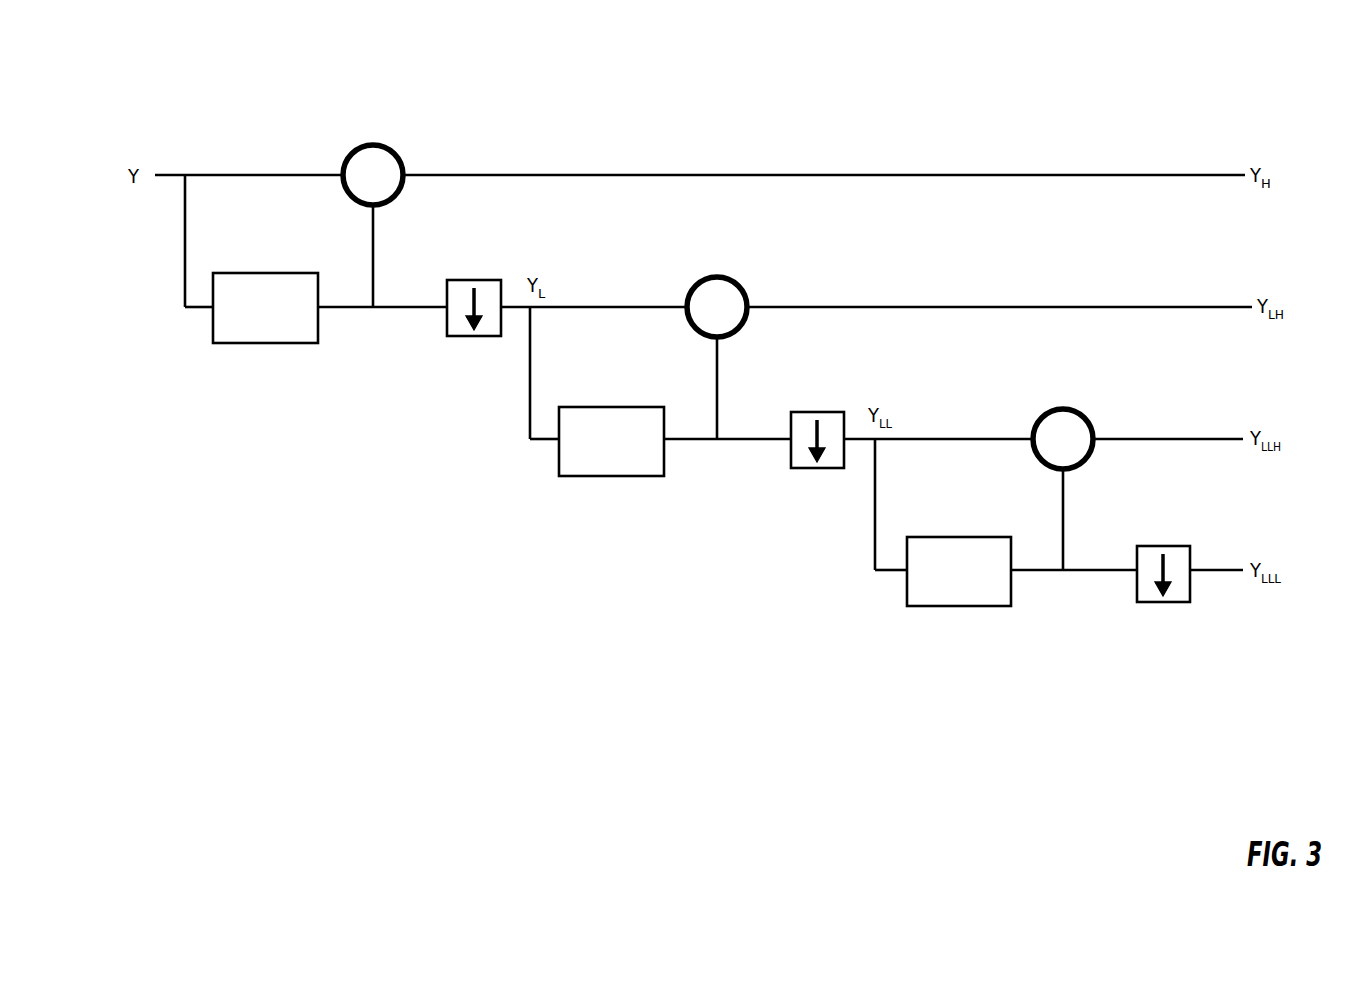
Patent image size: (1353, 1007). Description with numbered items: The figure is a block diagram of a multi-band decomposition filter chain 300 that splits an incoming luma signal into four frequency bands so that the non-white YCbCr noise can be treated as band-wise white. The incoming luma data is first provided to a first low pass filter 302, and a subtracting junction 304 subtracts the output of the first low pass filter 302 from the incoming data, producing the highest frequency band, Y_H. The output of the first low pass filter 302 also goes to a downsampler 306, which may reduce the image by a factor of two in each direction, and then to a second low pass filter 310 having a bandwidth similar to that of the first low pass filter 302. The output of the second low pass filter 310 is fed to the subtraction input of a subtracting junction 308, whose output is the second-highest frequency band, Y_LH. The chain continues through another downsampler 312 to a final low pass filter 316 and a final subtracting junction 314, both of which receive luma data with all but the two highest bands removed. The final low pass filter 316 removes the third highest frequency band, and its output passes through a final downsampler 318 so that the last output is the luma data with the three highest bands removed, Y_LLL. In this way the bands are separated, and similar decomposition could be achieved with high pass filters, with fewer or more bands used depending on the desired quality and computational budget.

The multi-band decomposition filter chain 300 is at (194, 84).
The first low pass filter 302 is at (282, 273).
The subtracting junction 304 is at (373, 145).
The downsampler 306 is at (474, 280).
The subtracting junction 308 is at (717, 277).
The second low pass filter 310 is at (630, 407).
The downsampler 312 is at (817, 412).
The final subtracting junction 314 is at (1063, 409).
The final low pass filter 316 is at (975, 537).
The final downsampler 318 is at (1163, 546).